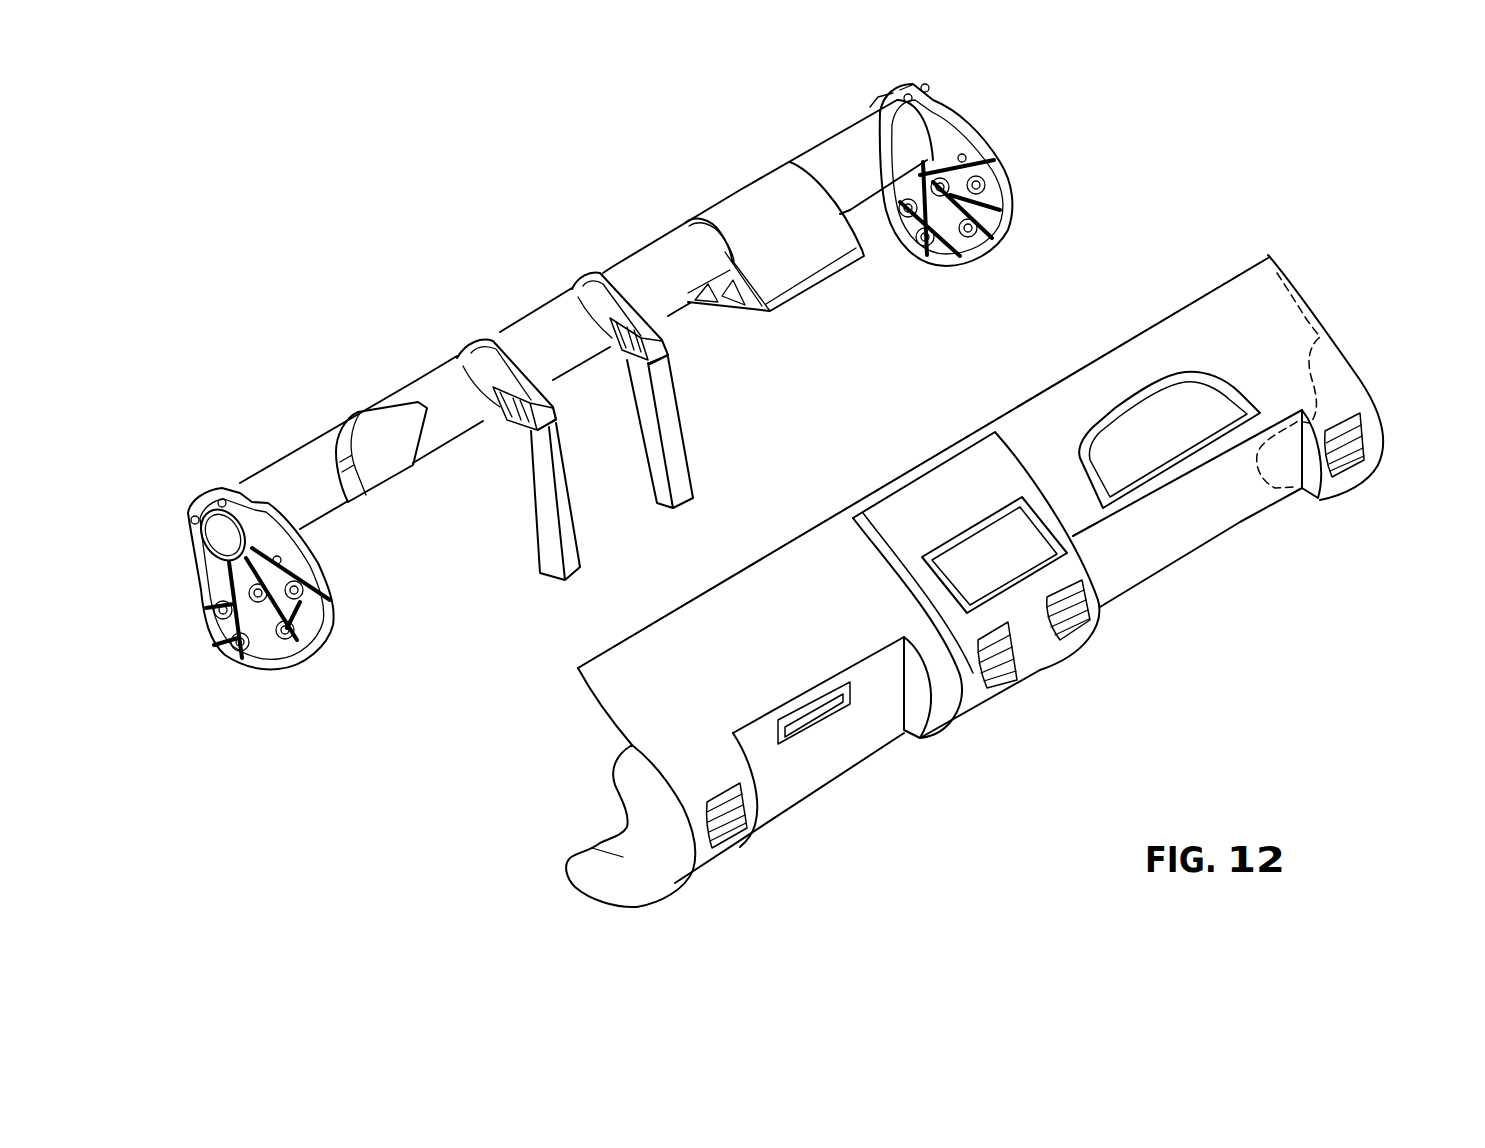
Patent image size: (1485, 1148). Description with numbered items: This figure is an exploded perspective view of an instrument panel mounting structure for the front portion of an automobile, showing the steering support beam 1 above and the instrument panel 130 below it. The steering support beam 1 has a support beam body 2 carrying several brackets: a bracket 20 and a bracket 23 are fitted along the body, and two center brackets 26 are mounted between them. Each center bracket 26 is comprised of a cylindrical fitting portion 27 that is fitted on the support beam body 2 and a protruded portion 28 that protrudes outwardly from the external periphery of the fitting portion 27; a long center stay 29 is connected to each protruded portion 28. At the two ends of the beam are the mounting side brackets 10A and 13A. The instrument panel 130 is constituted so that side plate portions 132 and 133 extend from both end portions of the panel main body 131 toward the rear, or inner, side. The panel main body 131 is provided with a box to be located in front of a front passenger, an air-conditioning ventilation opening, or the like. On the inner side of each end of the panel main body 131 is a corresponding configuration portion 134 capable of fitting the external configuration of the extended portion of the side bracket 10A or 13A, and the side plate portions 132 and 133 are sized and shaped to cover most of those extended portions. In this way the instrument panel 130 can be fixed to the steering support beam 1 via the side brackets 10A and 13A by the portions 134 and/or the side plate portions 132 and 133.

The steering support beam 1 is at (555, 320).
The support beam body 2 is at (533, 333).
The mounting side bracket 10A is at (203, 548).
The mounting side bracket 13A is at (973, 130).
The bracket 20 is at (358, 428).
The bracket 23 is at (748, 215).
The center bracket 26 is at (503, 526).
The cylindrical fitting portion 27 is at (475, 360).
The protruded portion 28 is at (538, 408).
The center stay 29 is at (565, 552).
The instrument panel 130 is at (1040, 653).
The panel main body 131 is at (947, 698).
The side plate portion 132 is at (595, 848).
The side plate portion 133 is at (1378, 420).
The corresponding configuration portion 134 is at (732, 840).